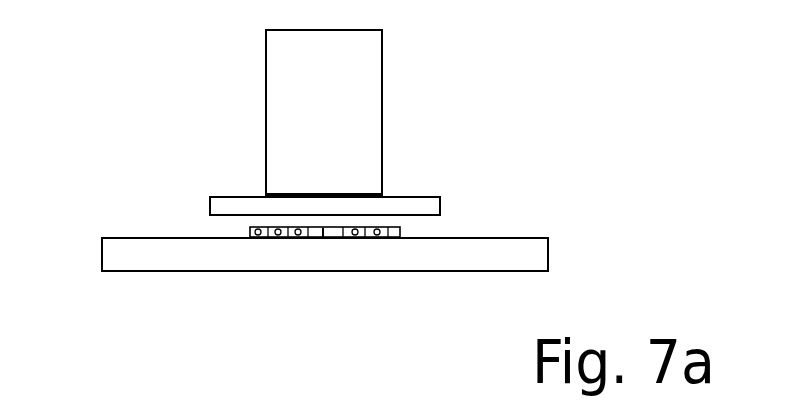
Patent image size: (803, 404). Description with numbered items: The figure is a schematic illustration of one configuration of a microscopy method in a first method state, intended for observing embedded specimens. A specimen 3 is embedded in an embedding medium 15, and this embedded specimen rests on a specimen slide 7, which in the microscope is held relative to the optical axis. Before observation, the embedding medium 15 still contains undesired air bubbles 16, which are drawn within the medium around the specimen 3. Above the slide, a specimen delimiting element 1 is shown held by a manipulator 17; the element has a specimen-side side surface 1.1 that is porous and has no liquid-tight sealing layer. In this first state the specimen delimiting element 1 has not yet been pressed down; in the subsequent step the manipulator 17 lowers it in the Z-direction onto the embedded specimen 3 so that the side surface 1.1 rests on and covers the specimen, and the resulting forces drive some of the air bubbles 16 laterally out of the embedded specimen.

The manipulator 17 is at (348, 60).
The specimen delimiting element 1 is at (398, 204).
The specimen-side side surface 1.1 is at (217, 216).
The embedding medium 15 is at (400, 227).
The specimen 3 is at (323, 236).
The air bubbles 16 is at (298, 236).
The specimen slide 7 is at (118, 255).